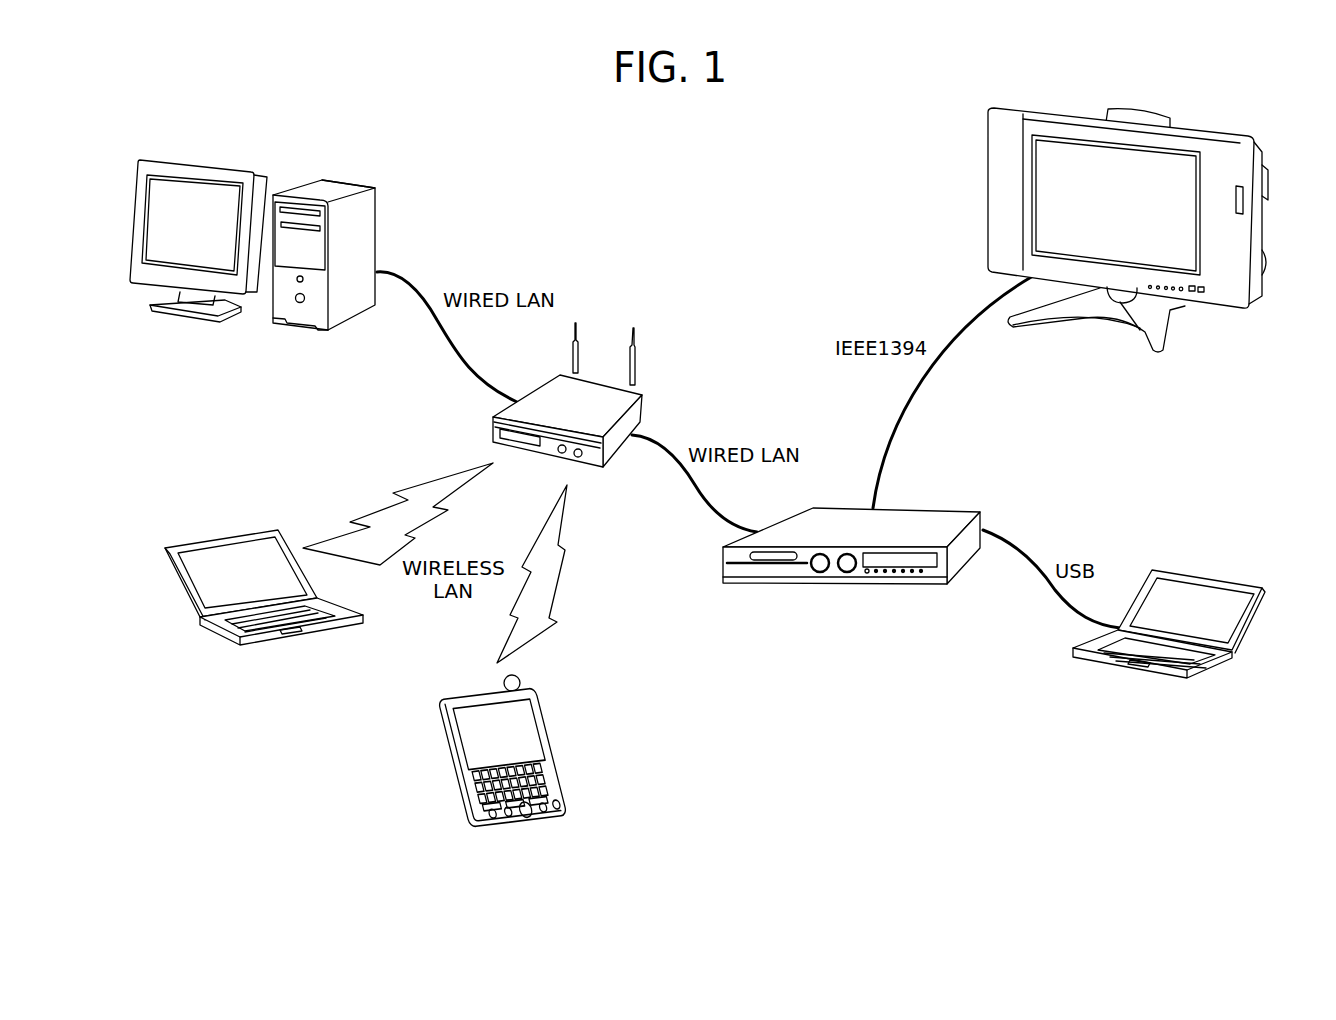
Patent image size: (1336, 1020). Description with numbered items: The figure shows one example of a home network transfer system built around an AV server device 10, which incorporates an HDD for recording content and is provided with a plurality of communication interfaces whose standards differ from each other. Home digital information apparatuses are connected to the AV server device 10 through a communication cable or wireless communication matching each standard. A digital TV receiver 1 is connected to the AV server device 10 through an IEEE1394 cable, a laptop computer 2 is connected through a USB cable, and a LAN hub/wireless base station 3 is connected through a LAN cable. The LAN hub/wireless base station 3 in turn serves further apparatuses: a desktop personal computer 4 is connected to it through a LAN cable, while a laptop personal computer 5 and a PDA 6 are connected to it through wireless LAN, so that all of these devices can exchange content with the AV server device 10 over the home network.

The digital TV receiver 1 is at (1204, 130).
The laptop computer 2 is at (1218, 577).
The LAN hub/wireless base station 3 is at (498, 413).
The desktop personal computer 4 is at (217, 163).
The laptop personal computer 5 is at (232, 537).
The PDA 6 is at (548, 735).
The AV server device 10 is at (948, 508).